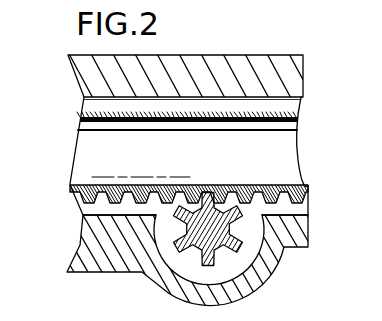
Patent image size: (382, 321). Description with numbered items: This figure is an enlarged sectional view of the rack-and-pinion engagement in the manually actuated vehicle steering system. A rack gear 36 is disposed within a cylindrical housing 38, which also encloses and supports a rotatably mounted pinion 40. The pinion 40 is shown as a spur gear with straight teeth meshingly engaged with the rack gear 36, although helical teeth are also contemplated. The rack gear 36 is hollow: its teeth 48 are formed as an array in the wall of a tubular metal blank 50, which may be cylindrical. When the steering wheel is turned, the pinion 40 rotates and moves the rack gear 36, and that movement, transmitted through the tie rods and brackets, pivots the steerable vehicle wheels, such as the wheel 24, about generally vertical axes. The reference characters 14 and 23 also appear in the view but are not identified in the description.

The cylindrical housing 38 is at (250, 72).
The rack gear 36 is at (305, 115).
The belt teeth 23 is at (168, 188).
The dirigible wheel 24 is at (249, 172).
The housing 14 is at (188, 287).
The pinion 40 is at (237, 240).
The hollow teeth 48 is at (279, 208).
The tubular metal blank 50 is at (372, 314).